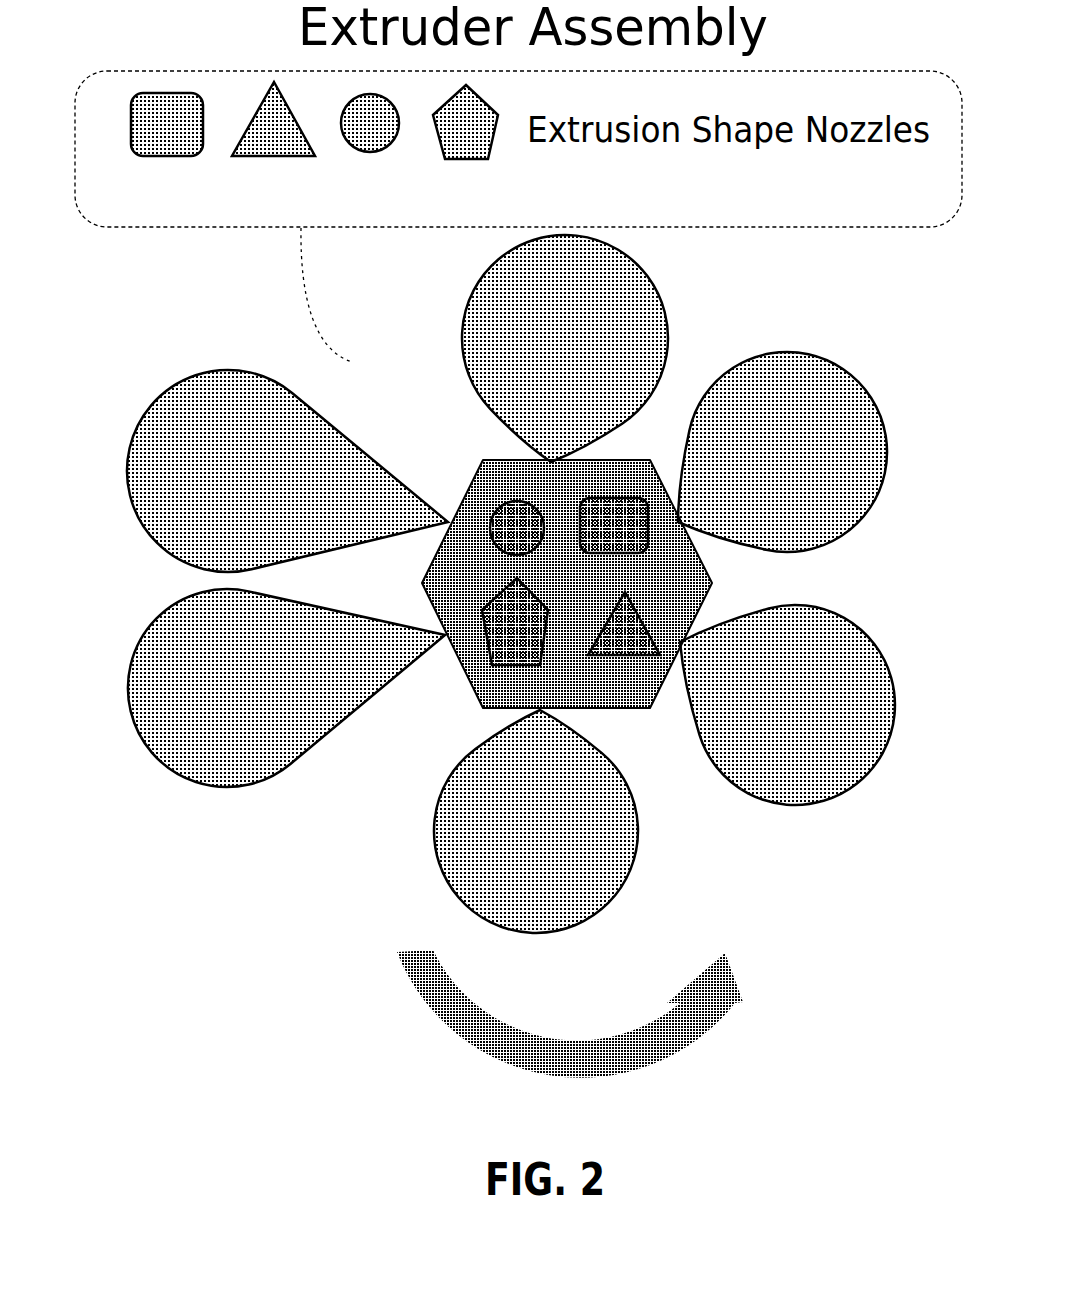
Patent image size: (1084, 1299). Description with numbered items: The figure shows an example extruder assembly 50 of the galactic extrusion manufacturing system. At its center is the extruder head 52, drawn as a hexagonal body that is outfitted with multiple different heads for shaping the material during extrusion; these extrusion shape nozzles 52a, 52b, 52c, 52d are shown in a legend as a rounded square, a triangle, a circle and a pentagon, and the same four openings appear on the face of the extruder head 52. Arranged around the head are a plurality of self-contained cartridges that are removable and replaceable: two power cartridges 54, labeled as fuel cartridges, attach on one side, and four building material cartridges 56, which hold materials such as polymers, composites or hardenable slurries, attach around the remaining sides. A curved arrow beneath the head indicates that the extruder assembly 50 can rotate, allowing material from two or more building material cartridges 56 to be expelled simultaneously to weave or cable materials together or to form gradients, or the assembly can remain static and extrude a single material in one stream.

The extruder assembly 50 is at (469, 656).
The extruder head 52 is at (594, 576).
The extrusion shape nozzle 52a is at (167, 156).
The extrusion shape nozzle 52b is at (275, 156).
The extrusion shape nozzle 52c is at (370, 152).
The extrusion shape nozzle 52d is at (466, 159).
The power cartridge 54 is at (140, 637).
The building material cartridge 56 is at (803, 347).